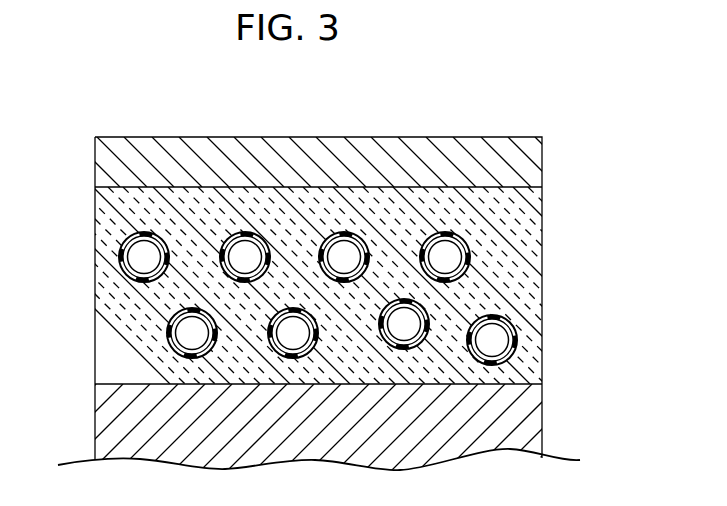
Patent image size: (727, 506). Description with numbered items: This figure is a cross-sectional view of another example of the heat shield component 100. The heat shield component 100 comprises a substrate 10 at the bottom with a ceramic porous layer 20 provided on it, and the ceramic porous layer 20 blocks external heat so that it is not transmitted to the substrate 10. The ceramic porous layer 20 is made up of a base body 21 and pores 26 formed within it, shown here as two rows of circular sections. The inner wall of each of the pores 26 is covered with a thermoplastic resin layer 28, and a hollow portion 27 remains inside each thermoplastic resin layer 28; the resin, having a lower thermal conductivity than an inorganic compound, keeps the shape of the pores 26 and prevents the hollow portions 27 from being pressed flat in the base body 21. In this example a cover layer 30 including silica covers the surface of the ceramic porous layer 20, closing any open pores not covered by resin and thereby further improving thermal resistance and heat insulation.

The heat shield component 100 is at (411, 75).
The cover layer 30 is at (553, 166).
The base body 21 is at (544, 220).
The ceramic porous layer 20 is at (553, 287).
The substrate 10 is at (553, 413).
The pores 26 is at (109, 258).
The thermoplastic resin layer 28 is at (174, 317).
The hollow portion 27 is at (185, 334).